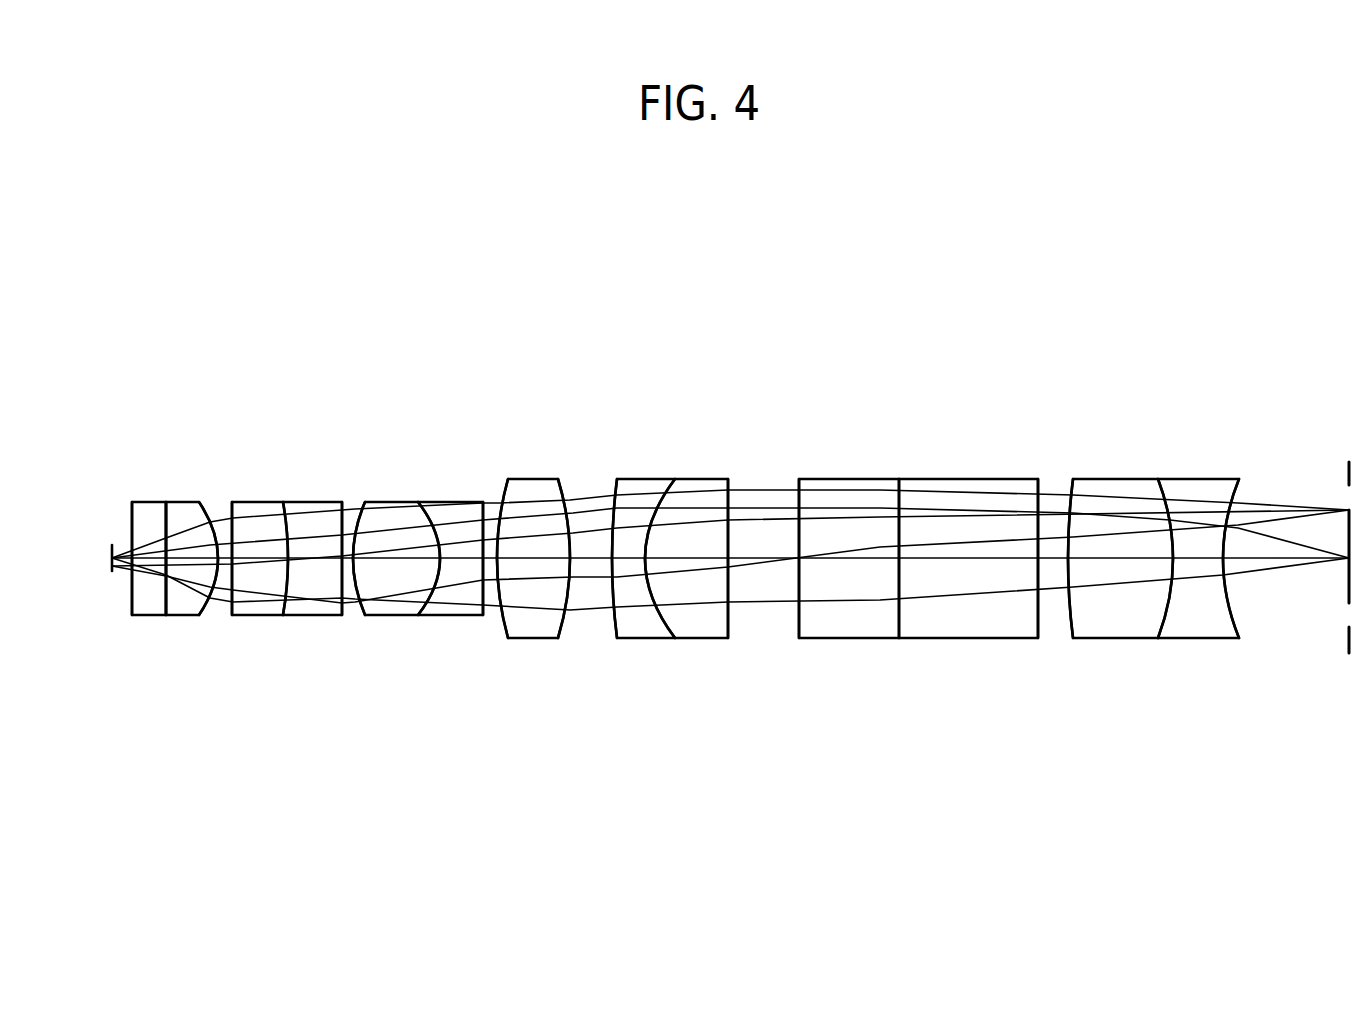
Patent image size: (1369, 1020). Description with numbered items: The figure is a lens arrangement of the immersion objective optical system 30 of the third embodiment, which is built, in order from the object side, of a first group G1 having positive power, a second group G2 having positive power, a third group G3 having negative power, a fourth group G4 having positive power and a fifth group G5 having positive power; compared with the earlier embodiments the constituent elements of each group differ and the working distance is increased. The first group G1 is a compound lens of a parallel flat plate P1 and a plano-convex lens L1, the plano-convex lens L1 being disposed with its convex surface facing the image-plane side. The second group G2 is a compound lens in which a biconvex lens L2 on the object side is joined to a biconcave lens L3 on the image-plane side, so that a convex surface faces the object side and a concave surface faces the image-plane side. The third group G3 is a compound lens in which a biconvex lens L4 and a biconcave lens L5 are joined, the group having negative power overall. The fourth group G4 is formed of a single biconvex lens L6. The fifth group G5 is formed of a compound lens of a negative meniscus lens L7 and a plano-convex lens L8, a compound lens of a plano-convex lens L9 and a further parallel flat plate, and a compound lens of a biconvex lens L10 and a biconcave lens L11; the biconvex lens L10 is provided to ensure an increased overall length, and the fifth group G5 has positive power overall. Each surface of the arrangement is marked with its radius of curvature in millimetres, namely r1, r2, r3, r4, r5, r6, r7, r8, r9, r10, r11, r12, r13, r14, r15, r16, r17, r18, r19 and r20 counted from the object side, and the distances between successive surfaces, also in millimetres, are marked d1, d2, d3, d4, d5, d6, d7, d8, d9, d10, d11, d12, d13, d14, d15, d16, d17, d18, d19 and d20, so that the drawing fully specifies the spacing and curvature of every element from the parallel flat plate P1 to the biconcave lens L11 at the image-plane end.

The immersion objective optical system 30 is at (1293, 197).
The parallel flat plate P1 is at (148, 500).
The first group G1 is at (217, 330).
The second group G2 is at (347, 330).
The third group G3 is at (485, 330).
The fourth group G4 is at (577, 330).
The fifth group G5 is at (1280, 328).
The plano-convex lens L1 is at (196, 500).
The biconvex lens L2 is at (243, 500).
The biconcave lens L3 is at (290, 500).
The biconvex lens L4 is at (445, 500).
The biconcave lens L5 is at (552, 478).
The biconvex lens L6 is at (640, 478).
The negative meniscus lens L7 is at (707, 478).
The plano-convex lens L8 is at (825, 478).
The plano-convex lens L9 is at (945, 478).
The biconvex lens L10 is at (1117, 478).
The biconcave lens L11 is at (1235, 478).
The distance between surfaces d1 is at (149, 560).
The distance between surfaces d2 is at (183, 556).
The distance between surfaces d3 is at (225, 556).
The distance between surfaces d4 is at (258, 556).
The distance between surfaces d5 is at (313, 556).
The distance between surfaces d6 is at (349, 556).
The distance between surfaces d7 is at (398, 556).
The distance between surfaces d8 is at (462, 560).
The distance between surfaces d9 is at (491, 556).
The distance between surfaces d10 is at (534, 556).
The distance between surfaces d11 is at (590, 556).
The distance between surfaces d12 is at (630, 560).
The distance between surfaces d13 is at (688, 556).
The distance between surfaces d14 is at (760, 556).
The distance between surfaces d15 is at (850, 556).
The distance between surfaces d16 is at (968, 556).
The distance between surfaces d17 is at (1055, 556).
The distance between surfaces d18 is at (1120, 560).
The distance between surfaces d19 is at (1196, 556).
The distance between surfaces d20 is at (1290, 556).
The radius of curvature r1 is at (132, 600).
The radius of curvature r2 is at (166, 616).
The radius of curvature r3 is at (201, 614).
The radius of curvature r4 is at (233, 614).
The radius of curvature r5 is at (286, 614).
The radius of curvature r6 is at (343, 614).
The radius of curvature r7 is at (360, 614).
The radius of curvature r8 is at (420, 614).
The radius of curvature r9 is at (484, 612).
The radius of curvature r10 is at (505, 636).
The radius of curvature r11 is at (562, 636).
The radius of curvature r12 is at (617, 637).
The radius of curvature r13 is at (673, 637).
The radius of curvature r14 is at (730, 622).
The radius of curvature r15 is at (799, 626).
The radius of curvature r16 is at (900, 616).
The radius of curvature r17 is at (1040, 616).
The radius of curvature r18 is at (1068, 630).
The radius of curvature r19 is at (1163, 615).
The radius of curvature r20 is at (1236, 612).